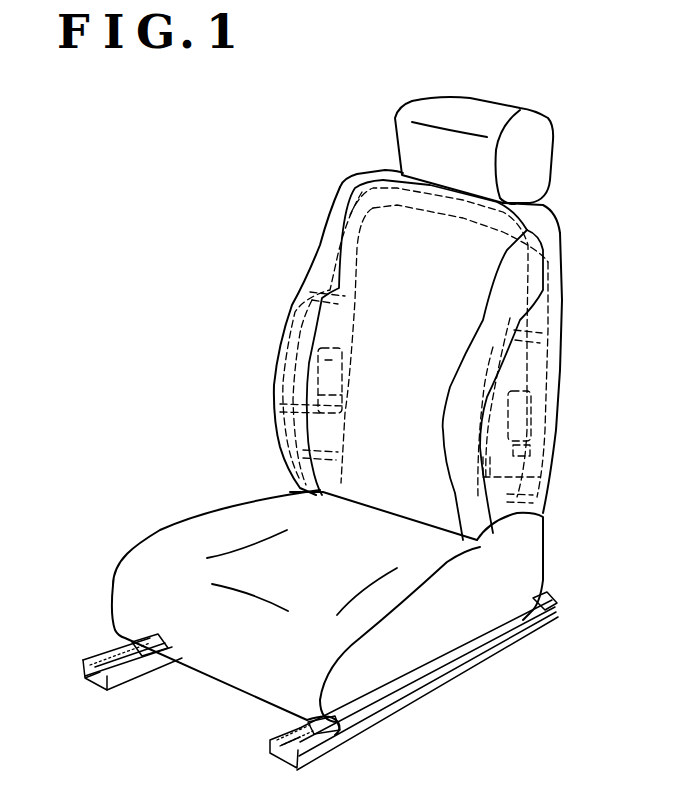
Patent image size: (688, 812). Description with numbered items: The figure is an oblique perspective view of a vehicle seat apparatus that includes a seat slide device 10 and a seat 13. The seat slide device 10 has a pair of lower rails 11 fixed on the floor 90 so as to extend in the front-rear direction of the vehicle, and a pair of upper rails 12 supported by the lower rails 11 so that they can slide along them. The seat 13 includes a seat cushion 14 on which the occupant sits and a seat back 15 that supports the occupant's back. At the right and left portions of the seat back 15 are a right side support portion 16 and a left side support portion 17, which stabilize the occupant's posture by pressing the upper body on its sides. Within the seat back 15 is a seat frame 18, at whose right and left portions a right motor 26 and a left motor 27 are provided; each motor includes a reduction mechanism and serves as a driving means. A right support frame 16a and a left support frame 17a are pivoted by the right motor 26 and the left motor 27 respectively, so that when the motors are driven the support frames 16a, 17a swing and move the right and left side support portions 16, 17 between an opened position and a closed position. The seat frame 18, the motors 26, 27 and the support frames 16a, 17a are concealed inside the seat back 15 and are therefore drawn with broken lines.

The vehicle seat 10 is at (117, 700).
The lower rail 11 is at (80, 663).
The upper rail 12 is at (156, 657).
The seat body 13 is at (130, 385).
The seat cushion 14 is at (220, 542).
The seat back 15 is at (397, 260).
The left side support portion 16 is at (283, 330).
The left side support base 16a is at (278, 430).
The right side support portion 17 is at (463, 388).
The right side support base 17a is at (507, 476).
The seat back frame 18 is at (540, 270).
The left side support actuator 26 is at (280, 367).
The right side support actuator 27 is at (523, 424).
The vehicle floor 90 is at (507, 732).